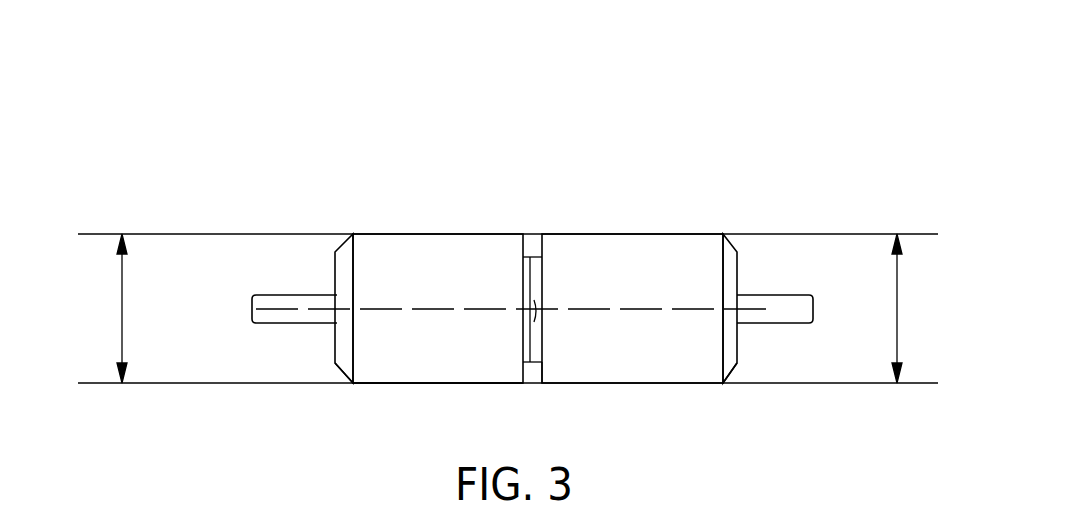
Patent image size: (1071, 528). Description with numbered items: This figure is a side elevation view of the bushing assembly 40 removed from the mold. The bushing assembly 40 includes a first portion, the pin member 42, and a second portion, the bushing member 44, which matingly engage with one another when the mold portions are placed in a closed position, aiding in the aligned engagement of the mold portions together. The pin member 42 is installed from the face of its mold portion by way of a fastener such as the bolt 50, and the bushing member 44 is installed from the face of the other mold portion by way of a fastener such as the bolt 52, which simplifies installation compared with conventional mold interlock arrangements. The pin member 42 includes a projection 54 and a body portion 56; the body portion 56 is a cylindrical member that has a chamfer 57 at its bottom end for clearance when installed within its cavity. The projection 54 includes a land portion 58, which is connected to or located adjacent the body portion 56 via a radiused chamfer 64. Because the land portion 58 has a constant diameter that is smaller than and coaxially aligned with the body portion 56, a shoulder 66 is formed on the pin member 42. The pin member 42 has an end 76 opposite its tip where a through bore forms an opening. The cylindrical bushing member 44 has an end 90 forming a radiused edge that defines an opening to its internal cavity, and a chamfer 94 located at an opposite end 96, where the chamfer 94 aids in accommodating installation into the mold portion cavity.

The bushing assembly 40 is at (311, 76).
The pin member 42 is at (391, 226).
The bushing member 44 is at (636, 226).
The bolt 50 is at (283, 298).
The bolt 52 is at (783, 303).
The projection 54 is at (540, 250).
The body portion 56 is at (387, 370).
The chamfer 57 is at (345, 363).
The land portion 58 is at (535, 345).
The radiused chamfer 64 is at (540, 352).
The shoulder 66 is at (528, 257).
The end of pin member 76 is at (335, 339).
The end of bushing member 90 is at (535, 376).
The chamfer 94 is at (733, 385).
The opposite end of bushing member 96 is at (740, 268).